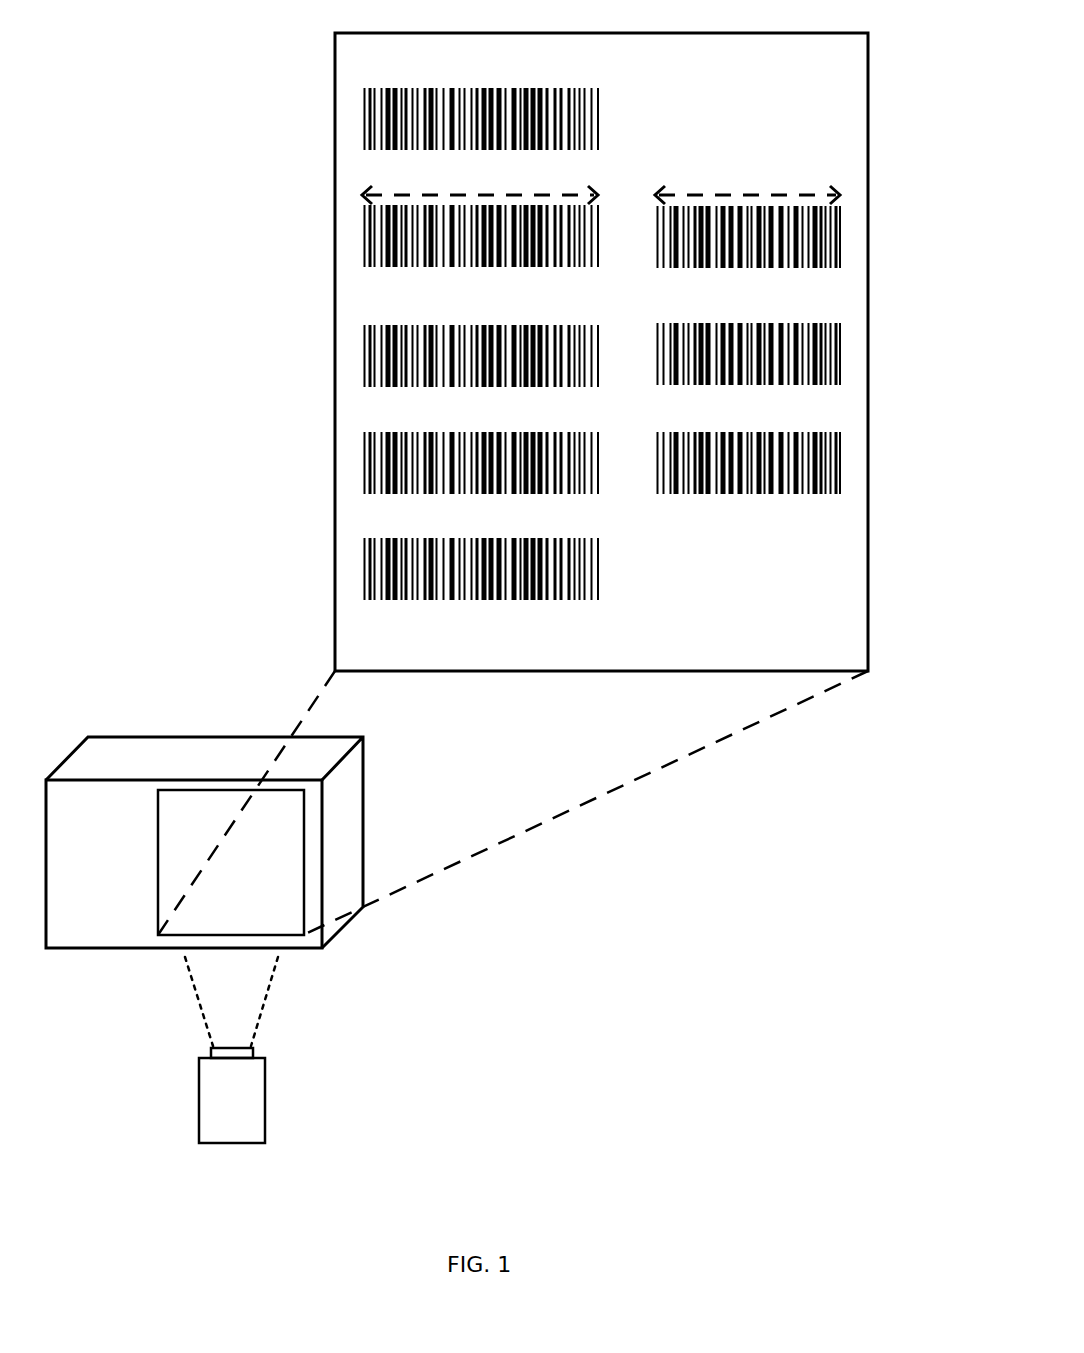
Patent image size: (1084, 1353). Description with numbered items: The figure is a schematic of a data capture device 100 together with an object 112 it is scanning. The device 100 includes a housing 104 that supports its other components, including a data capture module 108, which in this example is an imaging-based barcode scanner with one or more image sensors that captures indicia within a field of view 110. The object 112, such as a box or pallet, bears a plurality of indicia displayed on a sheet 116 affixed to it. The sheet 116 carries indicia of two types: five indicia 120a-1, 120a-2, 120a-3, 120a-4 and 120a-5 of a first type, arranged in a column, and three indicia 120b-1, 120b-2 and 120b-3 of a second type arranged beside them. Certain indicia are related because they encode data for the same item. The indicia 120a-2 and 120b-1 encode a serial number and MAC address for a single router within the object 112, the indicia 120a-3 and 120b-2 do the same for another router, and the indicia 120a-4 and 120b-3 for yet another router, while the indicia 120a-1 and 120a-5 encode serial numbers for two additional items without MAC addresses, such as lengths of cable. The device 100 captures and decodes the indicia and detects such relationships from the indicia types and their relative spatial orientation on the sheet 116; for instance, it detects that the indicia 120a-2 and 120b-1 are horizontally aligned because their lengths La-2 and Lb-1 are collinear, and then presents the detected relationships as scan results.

The data capture device 100 is at (222, 1145).
The housing 104 is at (199, 1100).
The data capture module 108 is at (211, 1050).
The field of view 110 is at (264, 1000).
The object 112 is at (107, 752).
The sheet 116 is at (275, 853).
The indicium of a first type 120a-1 is at (362, 120).
The indicium of a first type 120a-2 is at (362, 234).
The indicium of a first type 120a-3 is at (362, 357).
The indicium of a first type 120a-4 is at (362, 464).
The indicium of a first type 120a-5 is at (362, 570).
The indicium of a second type 120b-1 is at (842, 240).
The indicium of a second type 120b-2 is at (842, 352).
The indicium of a second type 120b-3 is at (842, 473).
The length of indicium 120a-2 La-2 is at (558, 195).
The length of indicium 120b-1 Lb-1 is at (745, 195).